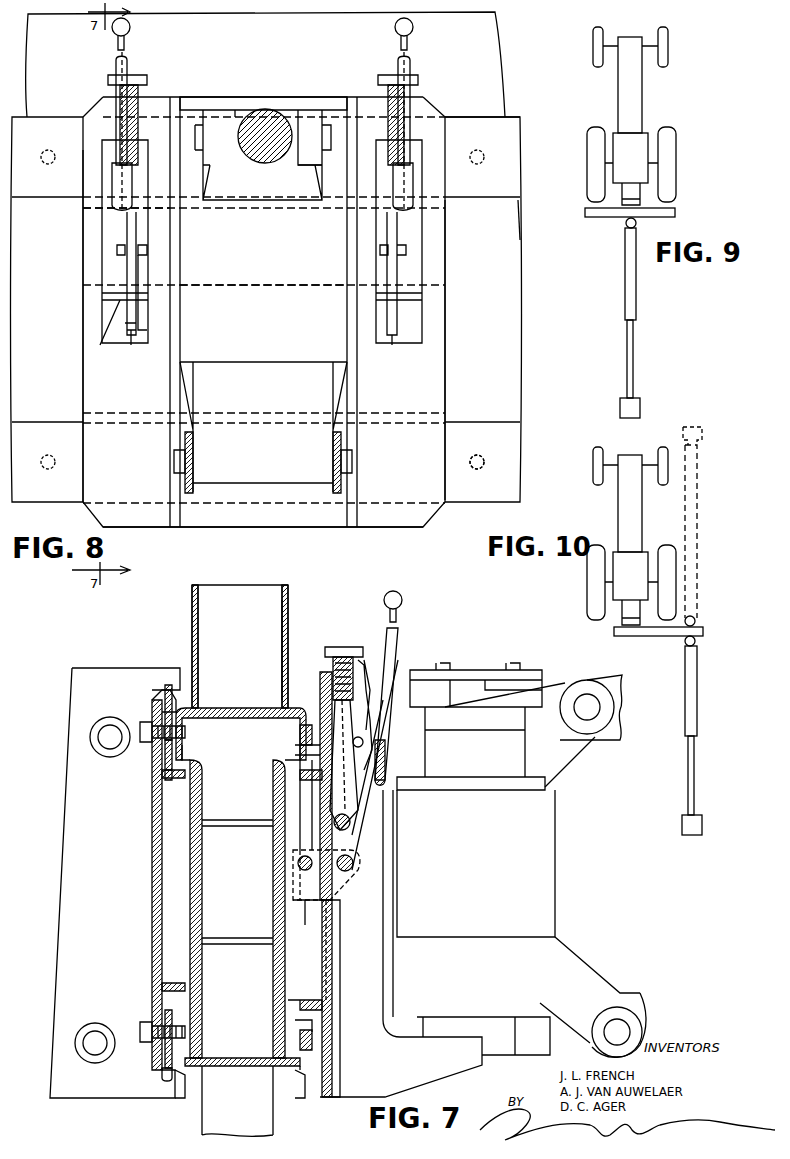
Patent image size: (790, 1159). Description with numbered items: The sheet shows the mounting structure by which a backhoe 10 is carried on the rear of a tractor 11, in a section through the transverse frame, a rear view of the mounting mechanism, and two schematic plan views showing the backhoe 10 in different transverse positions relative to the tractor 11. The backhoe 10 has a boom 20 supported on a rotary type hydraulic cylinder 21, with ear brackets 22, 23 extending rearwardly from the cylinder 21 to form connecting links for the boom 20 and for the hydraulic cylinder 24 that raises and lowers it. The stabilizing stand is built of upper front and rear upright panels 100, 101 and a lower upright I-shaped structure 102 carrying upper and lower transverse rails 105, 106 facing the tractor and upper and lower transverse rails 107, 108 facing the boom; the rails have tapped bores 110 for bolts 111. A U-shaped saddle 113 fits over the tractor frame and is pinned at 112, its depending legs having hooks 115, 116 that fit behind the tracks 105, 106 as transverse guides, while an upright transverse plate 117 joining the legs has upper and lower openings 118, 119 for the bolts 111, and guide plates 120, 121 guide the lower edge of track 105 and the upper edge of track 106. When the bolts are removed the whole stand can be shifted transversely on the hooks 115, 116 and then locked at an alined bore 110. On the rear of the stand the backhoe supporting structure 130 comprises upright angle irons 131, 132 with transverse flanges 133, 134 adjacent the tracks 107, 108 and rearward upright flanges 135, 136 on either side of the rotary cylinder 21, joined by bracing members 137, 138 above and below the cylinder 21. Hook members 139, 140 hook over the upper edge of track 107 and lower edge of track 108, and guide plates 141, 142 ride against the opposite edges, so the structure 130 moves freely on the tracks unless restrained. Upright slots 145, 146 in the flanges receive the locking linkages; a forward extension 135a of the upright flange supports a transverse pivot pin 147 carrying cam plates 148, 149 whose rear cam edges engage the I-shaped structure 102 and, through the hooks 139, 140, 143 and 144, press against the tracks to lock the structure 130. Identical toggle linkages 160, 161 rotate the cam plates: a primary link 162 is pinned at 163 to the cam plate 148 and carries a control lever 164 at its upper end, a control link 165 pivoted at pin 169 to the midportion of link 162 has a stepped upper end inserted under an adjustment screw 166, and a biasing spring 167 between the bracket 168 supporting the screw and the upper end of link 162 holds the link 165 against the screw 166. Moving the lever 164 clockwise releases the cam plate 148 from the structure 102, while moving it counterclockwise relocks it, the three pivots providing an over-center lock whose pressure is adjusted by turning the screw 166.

In FIG. 9, the backhoe 10 is at (617, 287).
In FIG. 10, the backhoe 10 is at (710, 714).
In FIG. 9, the tractor 11 is at (609, 101).
In FIG. 10, the tractor 11 is at (609, 507).
In FIG. 8, the boom 20 is at (342, 444).
In FIG. 7, the boom 20 is at (640, 1003).
In FIG. 8, the rotary type hydraulic cylinder 21 is at (232, 275).
In FIG. 7, the rotary type hydraulic cylinder 21 is at (555, 848).
In FIG. 8, the ear bracket 22 is at (247, 469).
In FIG. 7, the ear bracket 22 is at (585, 970).
In FIG. 8, the ear bracket 23 is at (306, 183).
In FIG. 7, the ear bracket 23 is at (578, 770).
In FIG. 8, the hydraulic cylinder 24 is at (267, 118).
In FIG. 7, the hydraulic cylinder 24 is at (612, 660).
In FIG. 7, the upper front upright panel 100 is at (197, 628).
In FIG. 8, the upper rear upright panel 101 is at (497, 78).
In FIG. 7, the upper rear upright panel 101 is at (283, 628).
In FIG. 8, the I-shaped upright structure 102 is at (518, 218).
In FIG. 7, the I-shaped upright structure 102 is at (213, 871).
In FIG. 7, the upper front transverse rail 105 is at (162, 695).
In FIG. 7, the lower front transverse rail 106 is at (163, 1068).
In FIG. 8, the upper rear transverse rail 107 is at (486, 190).
In FIG. 7, the upper rear transverse rail 107 is at (296, 745).
In FIG. 8, the lower rear transverse rail 108 is at (466, 428).
In FIG. 7, the lower rear transverse rail 108 is at (298, 1027).
In FIG. 7, the tapped bore 110 is at (300, 730).
In FIG. 7, the bolt 111 is at (186, 731).
In FIG. 7, the pin 112 is at (108, 745).
In FIG. 9, the U-shaped saddle 113 is at (636, 205).
In FIG. 7, the U-shaped saddle 113 is at (70, 890).
In FIG. 7, the hook 115 is at (182, 678).
In FIG. 7, the hook 116 is at (183, 1090).
In FIG. 7, the upright transverse plate 117 is at (152, 896).
In FIG. 7, the upper opening 118 is at (160, 748).
In FIG. 7, the lower opening 119 is at (160, 1028).
In FIG. 7, the guide plate 120 is at (172, 782).
In FIG. 7, the guide plate 121 is at (172, 982).
In FIG. 7, the backhoe supporting structure 130 is at (438, 664).
In FIG. 8, the upright angle iron member 131 is at (74, 327).
In FIG. 8, the upright angle iron member 132 is at (456, 329).
In FIG. 8, the transverse flange 133 is at (85, 364).
In FIG. 7, the transverse flange 133 is at (332, 1030).
In FIG. 8, the transverse flange 134 is at (437, 366).
In FIG. 8, the rearwardly extending upright flange 135 is at (176, 335).
In FIG. 7, the rearwardly extending upright flange 135 is at (346, 1098).
In FIG. 7, the forward extension 135a is at (333, 925).
In FIG. 8, the rearwardly extending upright flange 136 is at (348, 329).
In FIG. 8, the bracing member 137 is at (184, 100).
In FIG. 7, the bracing member 137 is at (480, 680).
In FIG. 8, the bracing member 138 is at (312, 523).
In FIG. 7, the bracing member 138 is at (530, 1053).
In FIG. 7, the hook member 139 is at (325, 670).
In FIG. 7, the hook member 140 is at (300, 1090).
In FIG. 8, the guide plate 141 is at (331, 205).
In FIG. 7, the guide plate 141 is at (308, 805).
In FIG. 8, the guide plate 142 is at (95, 208).
In FIG. 7, the guide plate 142 is at (326, 990).
In FIG. 7, the hook 143 is at (298, 772).
In FIG. 7, the hook 144 is at (295, 1000).
In FIG. 8, the upright slot 145 is at (104, 312).
In FIG. 8, the upright slot 146 is at (422, 310).
In FIG. 8, the transverse pivot pin 147 is at (255, 285).
In FIG. 7, the transverse pivot pin 147 is at (305, 856).
In FIG. 8, the cam plate 148 is at (128, 338).
In FIG. 7, the cam plate 148 is at (305, 902).
In FIG. 8, the cam plate 149 is at (393, 340).
In FIG. 8, the toggle linkage 160 is at (100, 188).
In FIG. 7, the toggle linkage 160 is at (398, 804).
In FIG. 8, the toggle linkage 161 is at (425, 172).
In FIG. 8, the primary link 162 is at (138, 268).
In FIG. 7, the primary link 162 is at (366, 818).
In FIG. 8, the pin 163 is at (113, 330).
In FIG. 7, the pin 163 is at (353, 866).
In FIG. 8, the control lever 164 is at (115, 66).
In FIG. 7, the control lever 164 is at (393, 645).
In FIG. 8, the control link 165 is at (127, 228).
In FIG. 7, the control link 165 is at (355, 787).
In FIG. 8, the adjustment screw 166 is at (147, 78).
In FIG. 7, the adjustment screw 166 is at (350, 646).
In FIG. 8, the biasing spring 167 is at (135, 142).
In FIG. 7, the biasing spring 167 is at (368, 725).
In FIG. 7, the bracket 168 is at (340, 655).
In FIG. 8, the pivot pin 169 is at (148, 250).
In FIG. 7, the pivot pin 169 is at (350, 826).